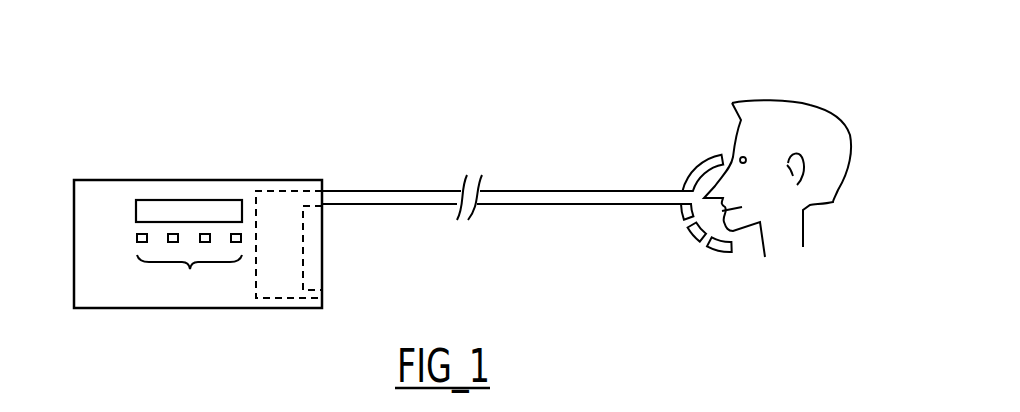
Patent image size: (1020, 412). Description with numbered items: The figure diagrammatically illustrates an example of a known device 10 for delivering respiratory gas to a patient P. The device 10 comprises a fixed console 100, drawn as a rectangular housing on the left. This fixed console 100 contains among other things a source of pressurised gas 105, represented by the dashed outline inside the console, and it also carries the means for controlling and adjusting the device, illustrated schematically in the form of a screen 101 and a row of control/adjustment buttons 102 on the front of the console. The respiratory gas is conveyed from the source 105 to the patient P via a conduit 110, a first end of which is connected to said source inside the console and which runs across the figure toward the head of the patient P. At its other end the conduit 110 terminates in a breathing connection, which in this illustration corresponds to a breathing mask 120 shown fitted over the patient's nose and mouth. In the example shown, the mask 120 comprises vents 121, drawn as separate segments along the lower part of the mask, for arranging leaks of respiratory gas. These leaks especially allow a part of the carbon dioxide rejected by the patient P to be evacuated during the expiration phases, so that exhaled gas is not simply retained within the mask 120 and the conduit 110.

The device 10 is at (443, 153).
The fixed console 100 is at (103, 197).
The screen 101 is at (208, 212).
The control/adjustment buttons 102 is at (188, 270).
The source of pressurised gas 105 is at (305, 262).
The conduit 110 is at (520, 193).
The mask 120 is at (688, 165).
The vents 121 is at (699, 244).
The person P is at (811, 104).